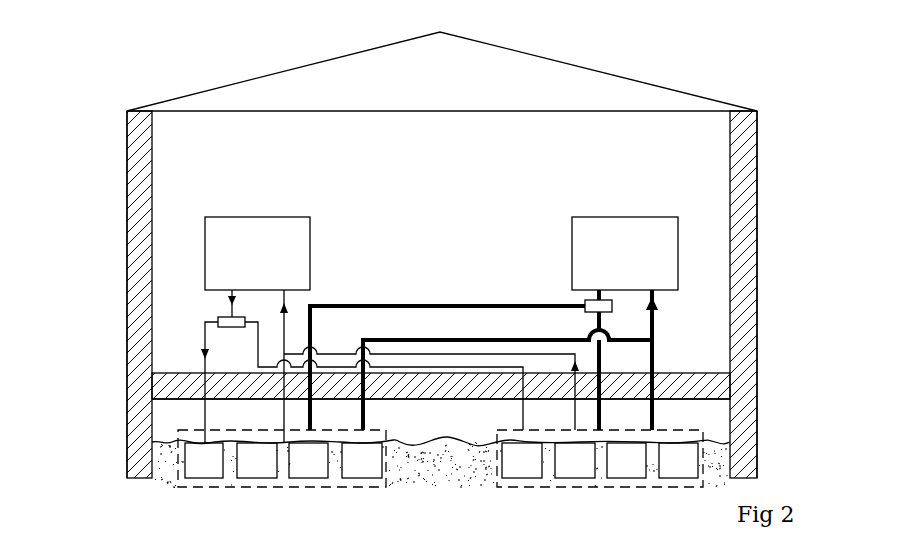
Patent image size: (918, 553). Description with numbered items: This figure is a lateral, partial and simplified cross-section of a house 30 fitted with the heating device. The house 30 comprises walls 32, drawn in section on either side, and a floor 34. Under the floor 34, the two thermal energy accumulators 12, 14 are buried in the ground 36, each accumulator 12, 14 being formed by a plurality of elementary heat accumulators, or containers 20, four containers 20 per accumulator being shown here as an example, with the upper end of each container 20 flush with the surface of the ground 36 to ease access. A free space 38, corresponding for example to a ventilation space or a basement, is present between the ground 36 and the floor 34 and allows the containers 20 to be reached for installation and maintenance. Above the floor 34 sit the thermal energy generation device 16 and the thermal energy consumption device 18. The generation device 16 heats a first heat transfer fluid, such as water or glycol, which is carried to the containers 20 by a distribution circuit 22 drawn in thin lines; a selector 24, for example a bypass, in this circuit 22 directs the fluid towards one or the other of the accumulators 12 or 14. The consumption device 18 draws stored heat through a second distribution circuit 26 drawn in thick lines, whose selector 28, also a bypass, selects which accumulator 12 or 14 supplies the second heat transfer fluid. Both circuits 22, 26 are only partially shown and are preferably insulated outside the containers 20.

The thermal energy accumulator 12 is at (203, 488).
The thermal energy accumulator 14 is at (518, 488).
The thermal energy generation device 16 is at (230, 240).
The thermal energy consumption device 18 is at (660, 238).
The elementary heat accumulator 20 is at (214, 475).
The distribution circuit 22 is at (196, 337).
The selector 24 is at (218, 318).
The distribution circuit 26 is at (655, 303).
The selector 28 is at (612, 312).
The house 30 is at (758, 125).
The wall 32 is at (140, 147).
The floor 34 is at (695, 373).
The ground 36 is at (715, 455).
The free space 38 is at (710, 412).